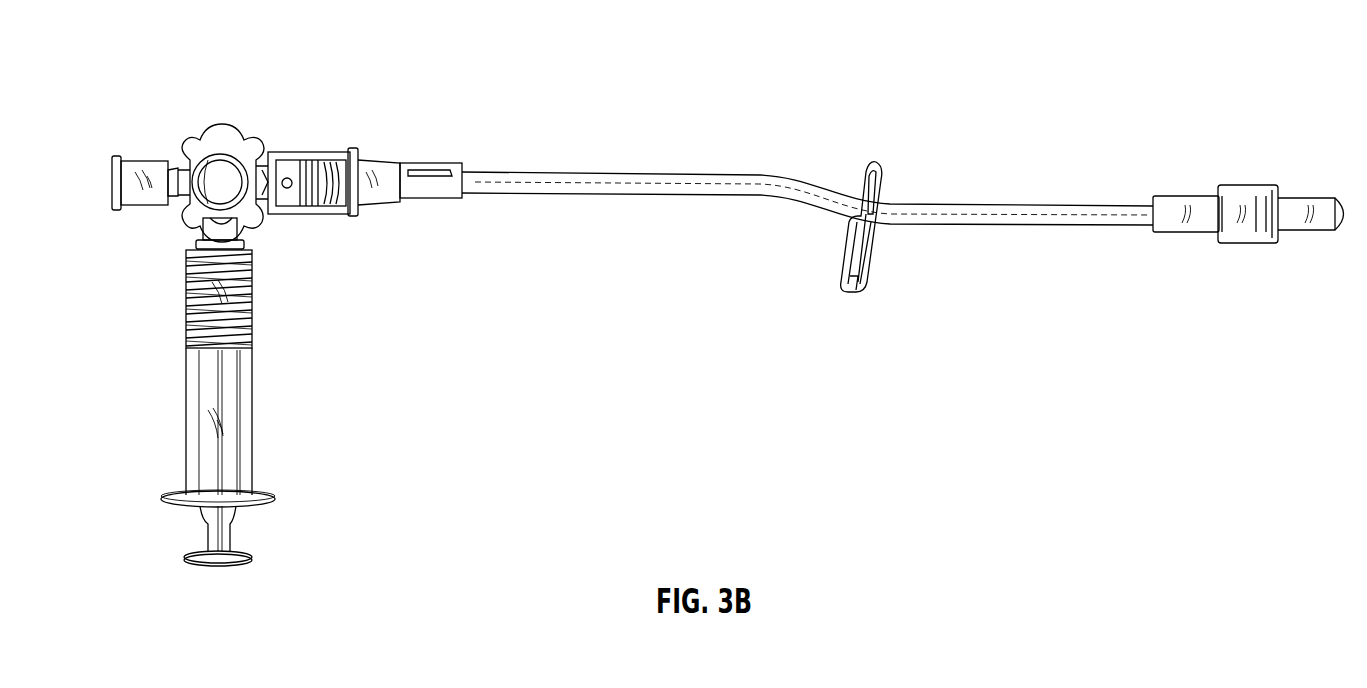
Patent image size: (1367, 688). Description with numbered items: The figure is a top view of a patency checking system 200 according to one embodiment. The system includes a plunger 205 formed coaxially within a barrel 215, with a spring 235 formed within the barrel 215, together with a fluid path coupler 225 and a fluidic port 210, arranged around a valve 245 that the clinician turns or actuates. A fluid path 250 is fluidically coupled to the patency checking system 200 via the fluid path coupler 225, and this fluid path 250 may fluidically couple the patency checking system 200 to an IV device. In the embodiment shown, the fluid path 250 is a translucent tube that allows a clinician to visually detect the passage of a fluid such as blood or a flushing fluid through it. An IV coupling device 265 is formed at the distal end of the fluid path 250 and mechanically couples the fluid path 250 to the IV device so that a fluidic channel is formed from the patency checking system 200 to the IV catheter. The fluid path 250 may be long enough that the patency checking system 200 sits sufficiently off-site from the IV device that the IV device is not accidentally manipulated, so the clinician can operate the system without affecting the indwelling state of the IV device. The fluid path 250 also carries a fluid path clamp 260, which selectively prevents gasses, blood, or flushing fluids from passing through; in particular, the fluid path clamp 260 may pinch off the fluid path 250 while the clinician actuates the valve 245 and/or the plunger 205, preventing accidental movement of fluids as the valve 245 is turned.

The patency checking system 200 is at (170, 56).
The plunger 205 is at (258, 558).
The fluidic port 210 is at (98, 181).
The barrel 215 is at (240, 398).
The fluid path coupler 225 is at (340, 150).
The spring 235 is at (252, 282).
The valve 245 is at (190, 178).
The fluid path 250 is at (612, 172).
The fluid path clamp 260 is at (878, 163).
The IV coupling device 265 is at (1240, 190).